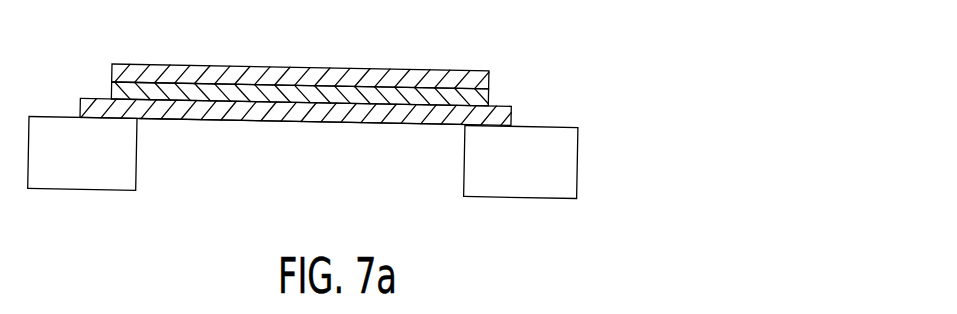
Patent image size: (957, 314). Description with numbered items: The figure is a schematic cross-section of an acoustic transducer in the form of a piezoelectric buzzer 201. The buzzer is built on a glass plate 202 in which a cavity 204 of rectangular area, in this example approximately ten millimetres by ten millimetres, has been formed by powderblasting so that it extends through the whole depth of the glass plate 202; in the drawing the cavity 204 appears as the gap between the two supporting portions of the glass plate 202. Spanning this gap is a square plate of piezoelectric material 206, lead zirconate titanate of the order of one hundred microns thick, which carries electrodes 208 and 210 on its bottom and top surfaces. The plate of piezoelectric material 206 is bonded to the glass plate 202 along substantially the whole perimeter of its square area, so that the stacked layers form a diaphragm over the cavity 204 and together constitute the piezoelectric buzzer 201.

The piezoelectric buzzer 201 is at (200, 29).
The glass plate 202 is at (120, 154).
The cavity 204 is at (292, 160).
The plate of piezoelectric material 206 is at (478, 93).
The electrode 208 is at (507, 113).
The electrode 210 is at (484, 76).